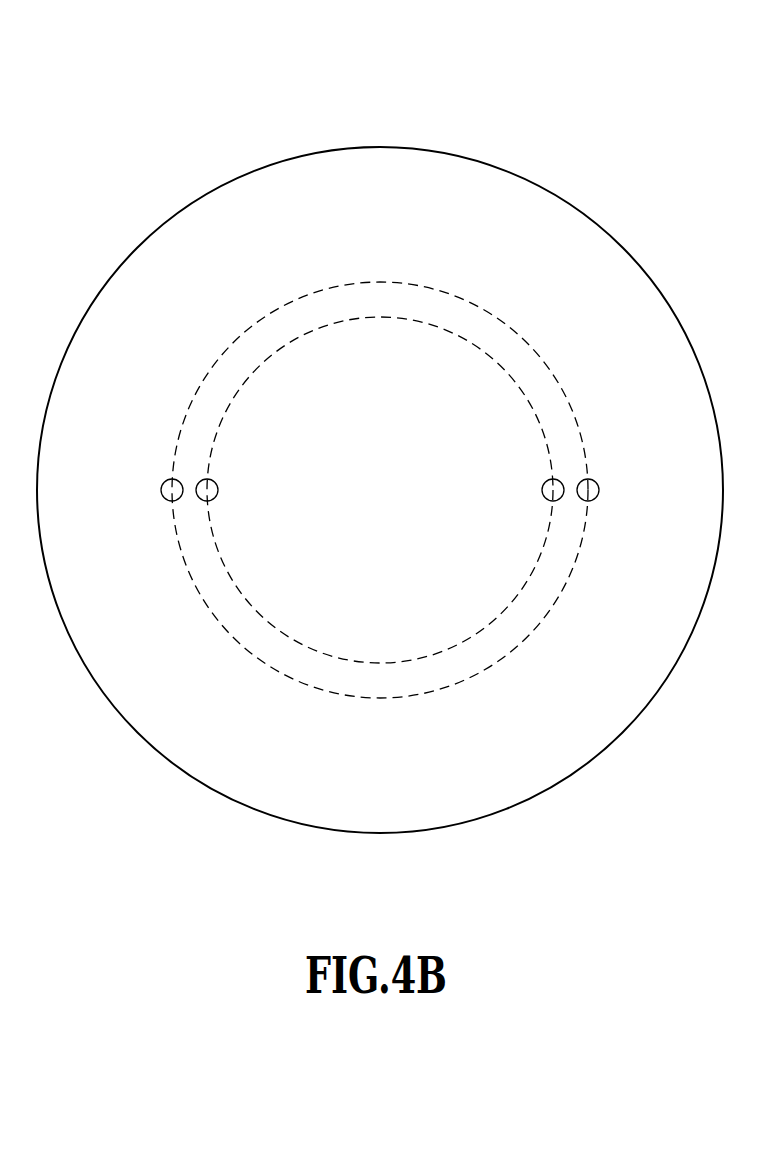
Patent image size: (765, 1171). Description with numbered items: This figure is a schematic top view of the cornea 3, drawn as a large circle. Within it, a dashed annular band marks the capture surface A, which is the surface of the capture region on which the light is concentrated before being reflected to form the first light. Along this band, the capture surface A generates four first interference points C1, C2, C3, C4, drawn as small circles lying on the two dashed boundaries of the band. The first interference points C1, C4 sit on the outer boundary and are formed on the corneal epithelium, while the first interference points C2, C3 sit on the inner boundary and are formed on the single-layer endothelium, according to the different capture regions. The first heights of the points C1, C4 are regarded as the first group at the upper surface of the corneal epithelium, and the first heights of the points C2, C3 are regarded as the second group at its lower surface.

The substrate 3 is at (124, 92).
The capture surface A is at (250, 378).
The first interference point C1 is at (160, 493).
The first interference point C2 is at (218, 497).
The first interference point C3 is at (541, 493).
The first interference point C4 is at (600, 498).